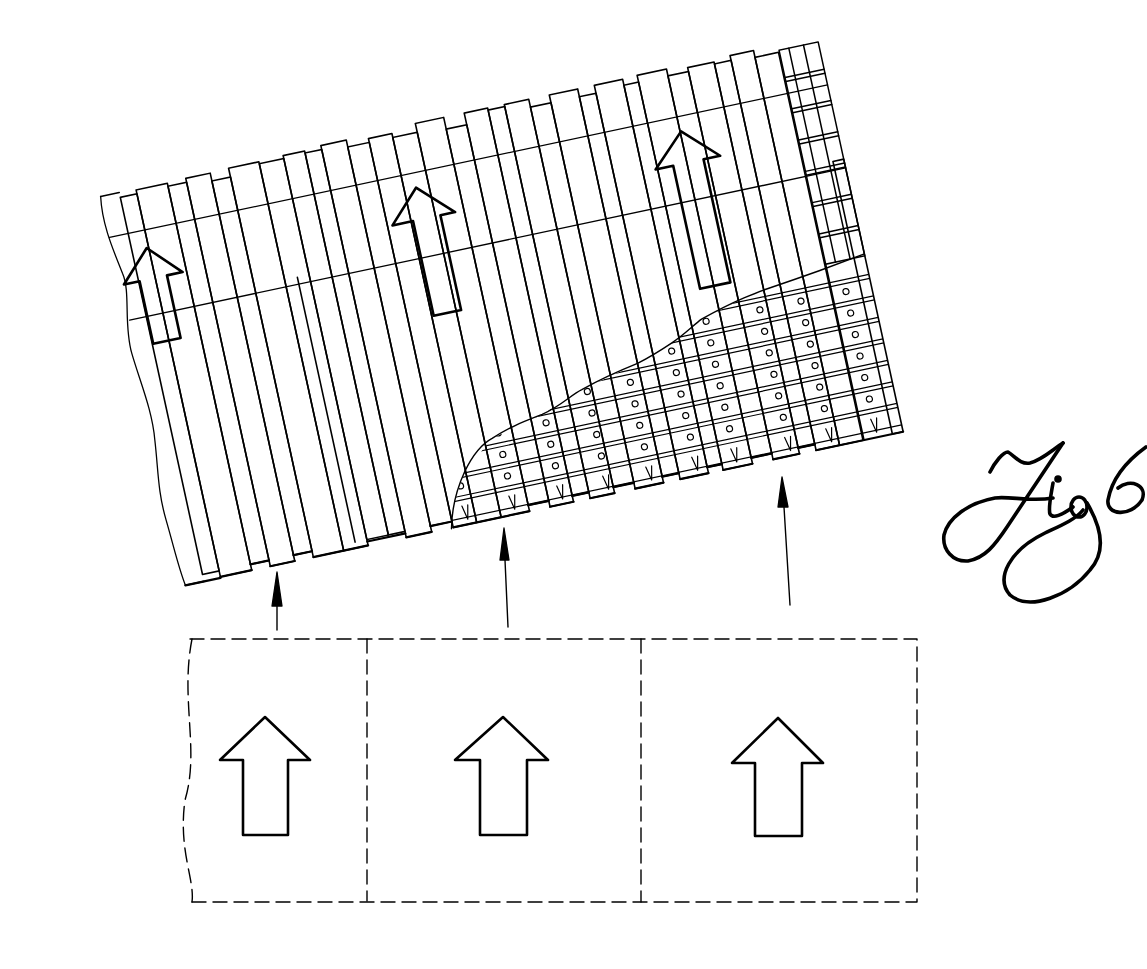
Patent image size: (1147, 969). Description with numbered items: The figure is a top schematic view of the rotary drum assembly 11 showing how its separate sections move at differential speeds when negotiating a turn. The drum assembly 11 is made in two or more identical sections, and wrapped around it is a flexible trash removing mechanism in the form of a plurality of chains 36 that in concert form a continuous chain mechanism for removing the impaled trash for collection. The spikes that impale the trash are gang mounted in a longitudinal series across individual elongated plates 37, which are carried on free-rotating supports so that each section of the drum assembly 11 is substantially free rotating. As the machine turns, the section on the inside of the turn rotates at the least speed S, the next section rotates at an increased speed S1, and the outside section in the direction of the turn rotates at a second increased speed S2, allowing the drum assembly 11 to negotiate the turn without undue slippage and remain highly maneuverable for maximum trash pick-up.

The rotary drum assembly 11 is at (883, 300).
The chains 36 is at (805, 108).
The elongated plates 37 is at (868, 335).
The least speed S is at (158, 317).
The increased speed S1 is at (453, 867).
The second increased speed S2 is at (730, 868).